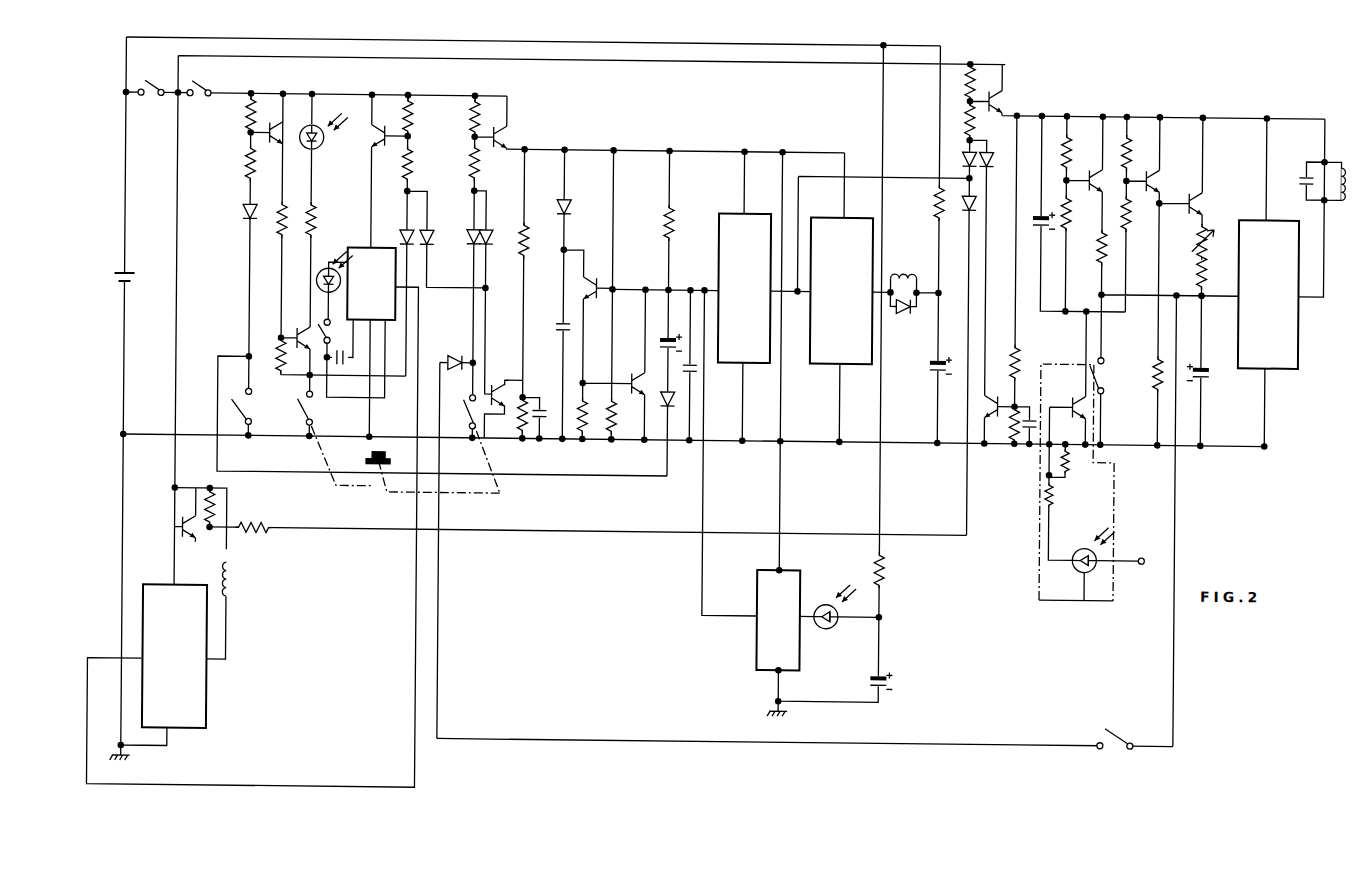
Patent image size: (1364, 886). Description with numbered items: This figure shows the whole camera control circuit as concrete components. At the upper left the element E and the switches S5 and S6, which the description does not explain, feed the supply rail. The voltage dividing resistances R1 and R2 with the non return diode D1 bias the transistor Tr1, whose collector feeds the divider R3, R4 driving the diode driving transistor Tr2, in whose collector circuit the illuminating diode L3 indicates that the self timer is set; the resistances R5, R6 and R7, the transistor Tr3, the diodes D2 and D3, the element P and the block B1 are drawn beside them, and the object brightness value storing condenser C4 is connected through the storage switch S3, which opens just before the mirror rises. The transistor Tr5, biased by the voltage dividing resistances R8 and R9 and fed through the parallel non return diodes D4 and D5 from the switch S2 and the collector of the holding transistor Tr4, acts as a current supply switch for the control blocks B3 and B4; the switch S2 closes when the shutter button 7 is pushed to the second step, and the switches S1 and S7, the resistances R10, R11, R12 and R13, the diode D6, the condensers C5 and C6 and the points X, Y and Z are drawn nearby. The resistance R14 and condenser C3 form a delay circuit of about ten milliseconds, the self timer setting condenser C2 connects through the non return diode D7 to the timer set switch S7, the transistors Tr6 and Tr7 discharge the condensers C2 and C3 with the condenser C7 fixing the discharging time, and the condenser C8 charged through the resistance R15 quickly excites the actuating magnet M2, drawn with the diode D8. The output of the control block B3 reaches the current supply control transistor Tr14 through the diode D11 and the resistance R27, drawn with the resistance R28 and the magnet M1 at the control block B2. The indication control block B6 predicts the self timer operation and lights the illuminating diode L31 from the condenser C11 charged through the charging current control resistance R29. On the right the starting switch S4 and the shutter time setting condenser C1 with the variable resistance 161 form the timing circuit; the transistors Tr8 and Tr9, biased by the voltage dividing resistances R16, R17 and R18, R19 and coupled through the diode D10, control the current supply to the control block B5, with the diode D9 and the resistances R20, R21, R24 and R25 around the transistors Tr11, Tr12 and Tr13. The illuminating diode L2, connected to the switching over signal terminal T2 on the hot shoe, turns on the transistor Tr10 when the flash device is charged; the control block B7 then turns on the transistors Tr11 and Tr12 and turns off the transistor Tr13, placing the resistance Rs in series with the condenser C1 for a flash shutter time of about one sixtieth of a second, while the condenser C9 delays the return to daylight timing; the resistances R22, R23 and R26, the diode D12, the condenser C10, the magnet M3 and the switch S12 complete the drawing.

The switch S5 is at (149, 81).
The switch S6 is at (198, 82).
The battery E is at (131, 278).
The voltage dividing resistance R1 is at (243, 114).
The voltage dividing resistance R2 is at (242, 163).
The voltage dividing resistance R3 is at (290, 220).
The voltage dividing resistance R4 is at (271, 361).
The resistor R5 is at (320, 220).
The resistor R6 is at (417, 116).
The resistor R7 is at (416, 164).
The voltage dividing resistance R8 is at (830, 194).
The voltage dividing resistance R9 is at (465, 163).
The resistor R10 is at (536, 240).
The resistor R11 is at (511, 415).
The resistor R12 is at (593, 416).
The resistor R13 is at (622, 416).
The resistance R14 is at (682, 223).
The charging resistance R15 is at (924, 203).
The voltage dividing resistance R16 is at (960, 82).
The voltage dividing resistance R17 is at (960, 120).
The voltage dividing resistance R18 is at (1026, 371).
The voltage dividing resistance R19 is at (1013, 437).
The resistor R20 is at (1078, 152).
The resistor R21 is at (1078, 213).
The resistor R22 is at (1061, 495).
The resistor R23 is at (1077, 469).
The resistor R24 is at (1137, 153).
The resistor R25 is at (1137, 214).
The resistor R26 is at (1144, 374).
The resistance R27 is at (253, 520).
The resistor R28 is at (198, 507).
The charging current control resistance R29 is at (891, 570).
The resistance Rs is at (1092, 247).
The non return diode D1 is at (242, 213).
The diode D2 is at (399, 238).
The diode D3 is at (436, 238).
The non return diode D4 is at (466, 238).
The non return diode D5 is at (495, 238).
The diode D6 is at (573, 207).
The non return diode D7 is at (677, 399).
The diode D8 is at (903, 315).
The diode D9 is at (960, 157).
The diode D10 is at (1000, 157).
The diode D11 is at (960, 203).
The diode D12 is at (457, 354).
The transistor Tr1 is at (285, 134).
The diode driving transistor Tr2 is at (295, 330).
The transistor Tr3 is at (365, 135).
The holding transistor Tr4 is at (500, 388).
The transistor Tr5 is at (512, 137).
The transistor Tr6 is at (595, 279).
The transistor Tr7 is at (629, 373).
The transistor Tr8 is at (1007, 100).
The transistor Tr9 is at (994, 398).
The transistor Tr10 is at (1070, 398).
The transistor Tr11 is at (1107, 181).
The transistor Tr12 is at (1167, 181).
The transistor Tr13 is at (1211, 204).
The current supply control transistor Tr14 is at (169, 528).
The shutter time setting condenser C1 is at (1208, 373).
The self timer setting condenser C2 is at (665, 339).
The condenser C3 is at (675, 366).
The object brightness value storing condenser C4 is at (345, 363).
The condenser C5 is at (545, 402).
The condenser C6 is at (1030, 437).
The condenser C7 is at (554, 328).
The condenser C8 is at (928, 365).
The condenser C9 is at (1034, 220).
The condenser C10 is at (1295, 180).
The condenser C11 is at (864, 680).
The illuminating diode L2 is at (1093, 557).
The illuminating diode L3 is at (324, 131).
The illuminating diode L31 is at (835, 617).
The photo element P is at (331, 278).
The circuit block B1 is at (371, 283).
The control block B2 is at (174, 656).
The control block B3 is at (744, 289).
The control block B4 is at (841, 291).
The control block B5 is at (1268, 294).
The indication control block B6 is at (778, 620).
The control circuit block B7 is at (1060, 592).
The magnet M1 is at (238, 579).
The actuating magnet M2 is at (904, 260).
The magnet M3 is at (1343, 193).
The switch S1 is at (323, 408).
The switch S2 is at (452, 425).
The storage switch S3 is at (340, 332).
The starting switch S4 is at (1113, 383).
The timer set switch S7 is at (258, 407).
The switch S12 is at (1127, 723).
The shutter button 7 is at (389, 456).
The variable resistance 161 is at (1216, 242).
The switching over signal terminal T2 is at (1153, 552).
The terminal X is at (844, 131).
The terminal Y is at (836, 457).
The terminal Z is at (692, 271).